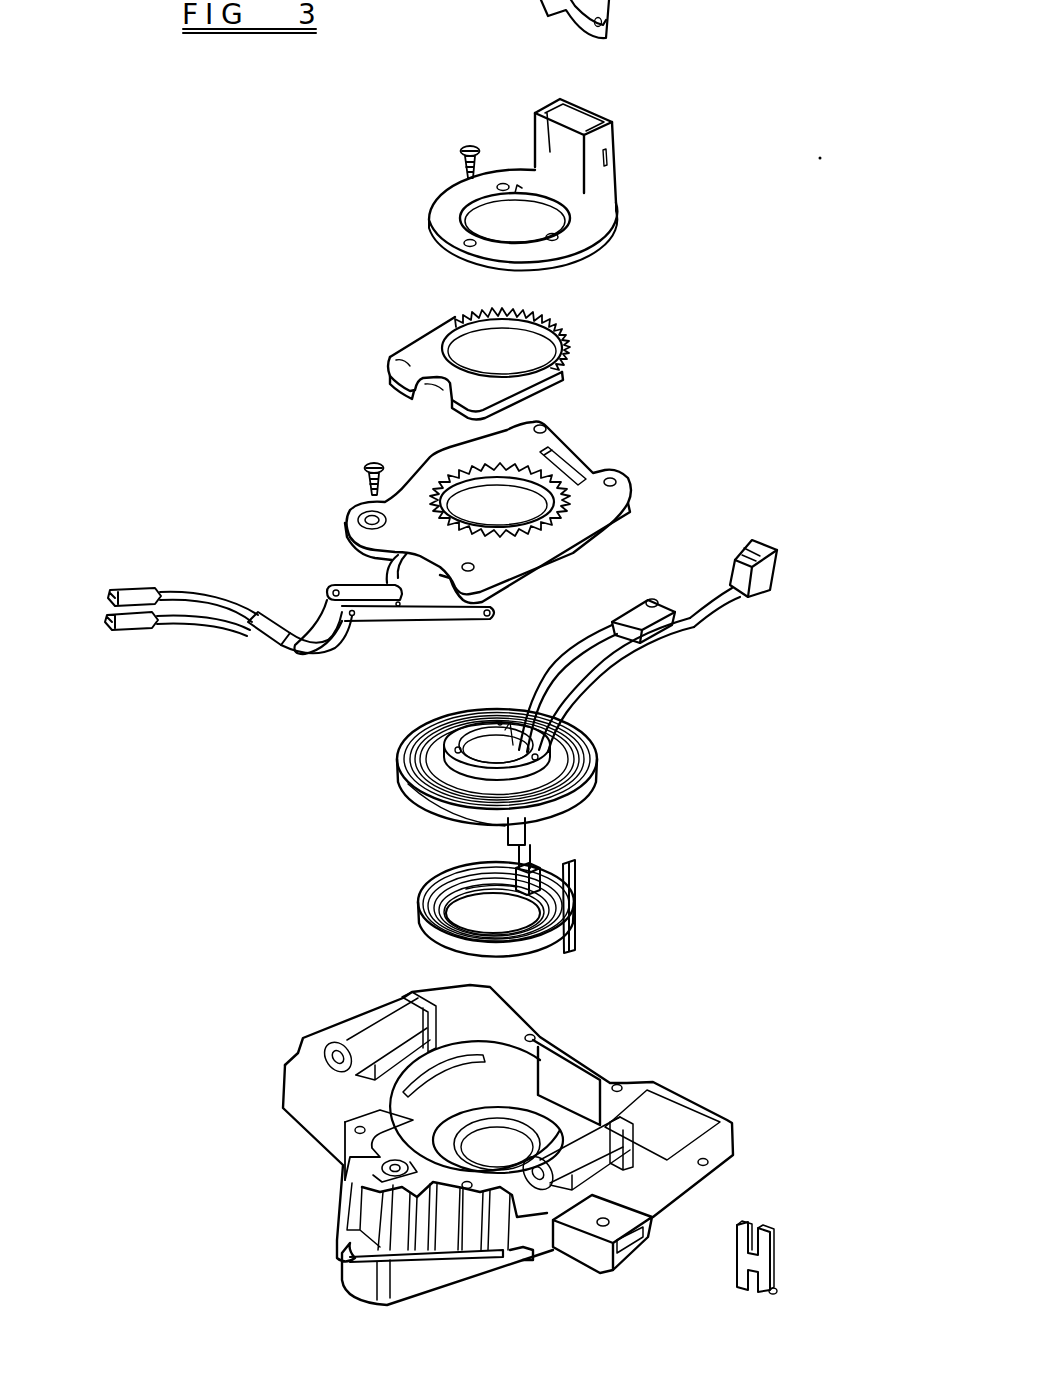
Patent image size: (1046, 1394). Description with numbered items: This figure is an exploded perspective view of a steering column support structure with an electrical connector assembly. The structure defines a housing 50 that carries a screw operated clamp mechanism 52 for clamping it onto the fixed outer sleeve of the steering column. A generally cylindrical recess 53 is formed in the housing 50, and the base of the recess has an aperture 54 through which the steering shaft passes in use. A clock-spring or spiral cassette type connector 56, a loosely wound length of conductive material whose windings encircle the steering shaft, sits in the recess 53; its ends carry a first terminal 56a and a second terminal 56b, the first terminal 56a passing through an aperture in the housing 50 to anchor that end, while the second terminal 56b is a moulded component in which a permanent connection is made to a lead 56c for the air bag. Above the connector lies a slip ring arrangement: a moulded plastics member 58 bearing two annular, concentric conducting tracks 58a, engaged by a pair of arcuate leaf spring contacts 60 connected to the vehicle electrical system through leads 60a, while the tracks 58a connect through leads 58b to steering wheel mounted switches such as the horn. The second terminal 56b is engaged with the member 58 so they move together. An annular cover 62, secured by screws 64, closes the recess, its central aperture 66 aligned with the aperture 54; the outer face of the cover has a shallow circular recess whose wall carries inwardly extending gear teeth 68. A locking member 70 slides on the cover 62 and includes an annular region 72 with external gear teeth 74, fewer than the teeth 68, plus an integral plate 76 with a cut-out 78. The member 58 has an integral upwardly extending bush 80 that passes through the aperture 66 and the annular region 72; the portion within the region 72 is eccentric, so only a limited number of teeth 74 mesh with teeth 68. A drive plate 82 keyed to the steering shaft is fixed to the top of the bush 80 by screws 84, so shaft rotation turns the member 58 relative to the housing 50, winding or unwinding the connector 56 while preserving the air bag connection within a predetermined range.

The housing 50 is at (465, 1145).
The screw operated clamp mechanism 52 is at (382, 1175).
The cylindrical recess 53 is at (350, 1118).
The aperture 54 is at (490, 1160).
The spiral cassette type connector 56 is at (532, 898).
The first terminal 56a is at (578, 922).
The second terminal 56b is at (576, 889).
The lead 56c is at (558, 658).
The moulded plastics member 58 is at (496, 787).
The electrically conducting tracks 58a is at (597, 752).
The leads 58b is at (714, 608).
The arcuate leaf spring contacts 60 is at (377, 612).
The leads 60a is at (188, 676).
The annular cover 62 is at (473, 503).
The screws 64 is at (364, 472).
The central aperture 66 is at (546, 466).
The gear teeth 68 is at (622, 503).
The locking member 70 is at (486, 346).
The annular region 72 is at (565, 322).
The gear teeth 74 is at (580, 355).
The plate 76 is at (395, 364).
The cut-out 78 is at (425, 393).
The bush 80 is at (447, 757).
The drive plate 82 is at (446, 220).
The screws 84 is at (456, 154).